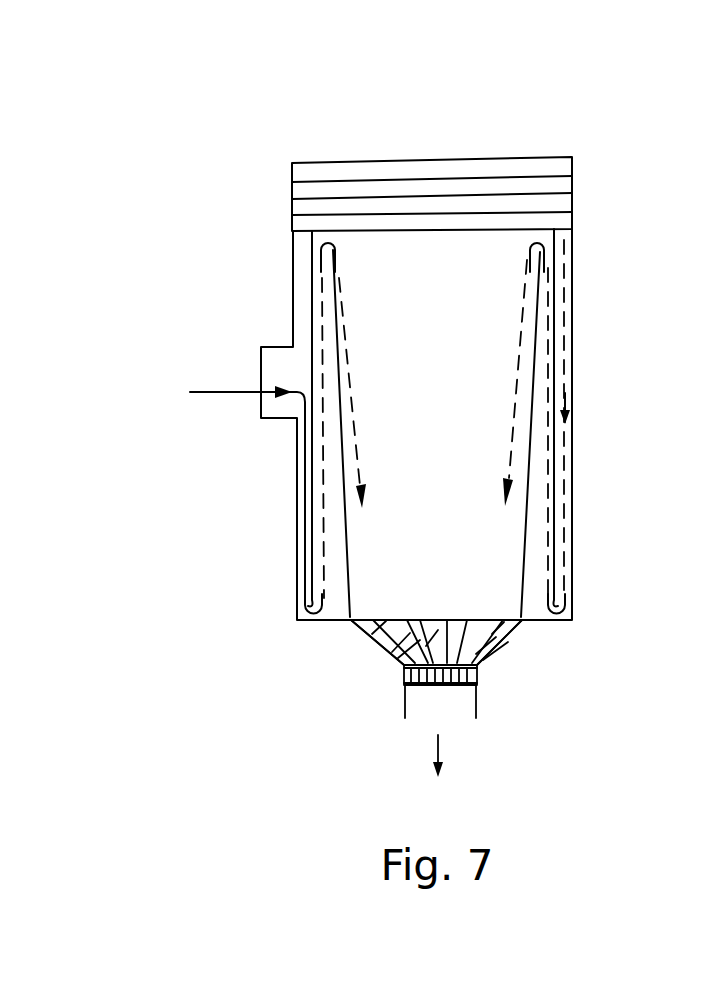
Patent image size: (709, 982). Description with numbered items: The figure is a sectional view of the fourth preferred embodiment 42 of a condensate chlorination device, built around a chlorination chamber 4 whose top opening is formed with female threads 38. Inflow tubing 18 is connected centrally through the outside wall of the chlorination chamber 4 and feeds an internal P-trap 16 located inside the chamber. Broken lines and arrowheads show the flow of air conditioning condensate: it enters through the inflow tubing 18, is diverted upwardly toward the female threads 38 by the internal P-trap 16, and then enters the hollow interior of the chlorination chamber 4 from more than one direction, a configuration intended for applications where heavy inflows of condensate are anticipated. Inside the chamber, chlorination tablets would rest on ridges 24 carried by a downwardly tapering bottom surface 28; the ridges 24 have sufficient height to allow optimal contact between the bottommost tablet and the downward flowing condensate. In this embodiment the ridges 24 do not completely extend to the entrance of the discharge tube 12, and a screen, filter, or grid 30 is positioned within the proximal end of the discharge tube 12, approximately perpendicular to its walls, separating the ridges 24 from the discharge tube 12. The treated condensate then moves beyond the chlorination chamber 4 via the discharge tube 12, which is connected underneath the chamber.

The fourth preferred embodiment 42 is at (340, 88).
The female threads 38 is at (557, 203).
The chlorination chamber 4 is at (543, 305).
The inflow tubing 18 is at (280, 358).
The internal P-trap 16 is at (308, 580).
The downwardly tapering bottom surface 28 is at (477, 627).
The ridges 24 is at (487, 652).
The screen, filter, or grid 30 is at (417, 685).
The discharge tube 12 is at (470, 692).